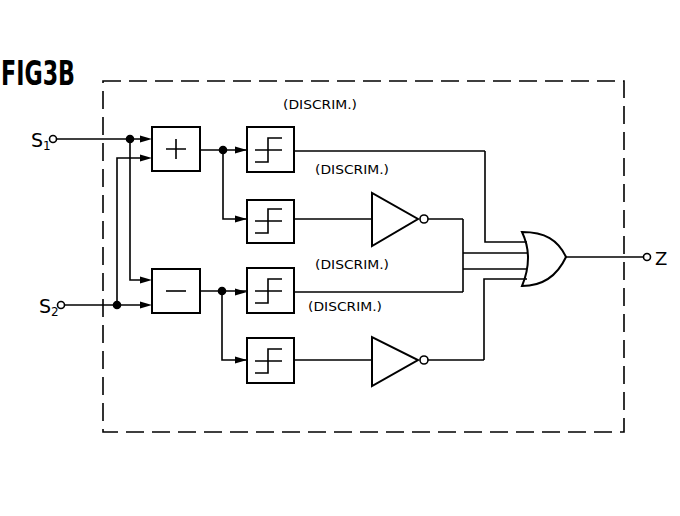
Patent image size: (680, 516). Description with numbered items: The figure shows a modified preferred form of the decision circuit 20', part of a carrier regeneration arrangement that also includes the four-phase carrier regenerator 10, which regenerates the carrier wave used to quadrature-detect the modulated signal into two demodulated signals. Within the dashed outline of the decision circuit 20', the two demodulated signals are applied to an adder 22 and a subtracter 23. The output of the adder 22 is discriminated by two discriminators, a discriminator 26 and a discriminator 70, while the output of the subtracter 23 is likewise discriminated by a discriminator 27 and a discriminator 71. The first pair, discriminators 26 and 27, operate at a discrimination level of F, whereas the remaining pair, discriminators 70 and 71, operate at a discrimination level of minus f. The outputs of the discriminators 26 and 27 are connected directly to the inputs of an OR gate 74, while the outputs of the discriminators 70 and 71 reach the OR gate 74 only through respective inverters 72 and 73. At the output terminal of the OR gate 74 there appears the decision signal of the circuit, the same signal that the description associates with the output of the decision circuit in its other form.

The 4-phase carrier regenerator 10 is at (420, 0).
The decision circuit 20' is at (363, 241).
The adder 22 is at (181, 127).
The subtracter 23 is at (178, 269).
The discriminator 26 is at (267, 127).
The discriminator 27 is at (288, 276).
The discriminator 70 is at (290, 204).
The discriminator 71 is at (291, 345).
The inverter 72 is at (383, 206).
The inverter 73 is at (384, 348).
The OR gate 74 is at (542, 241).